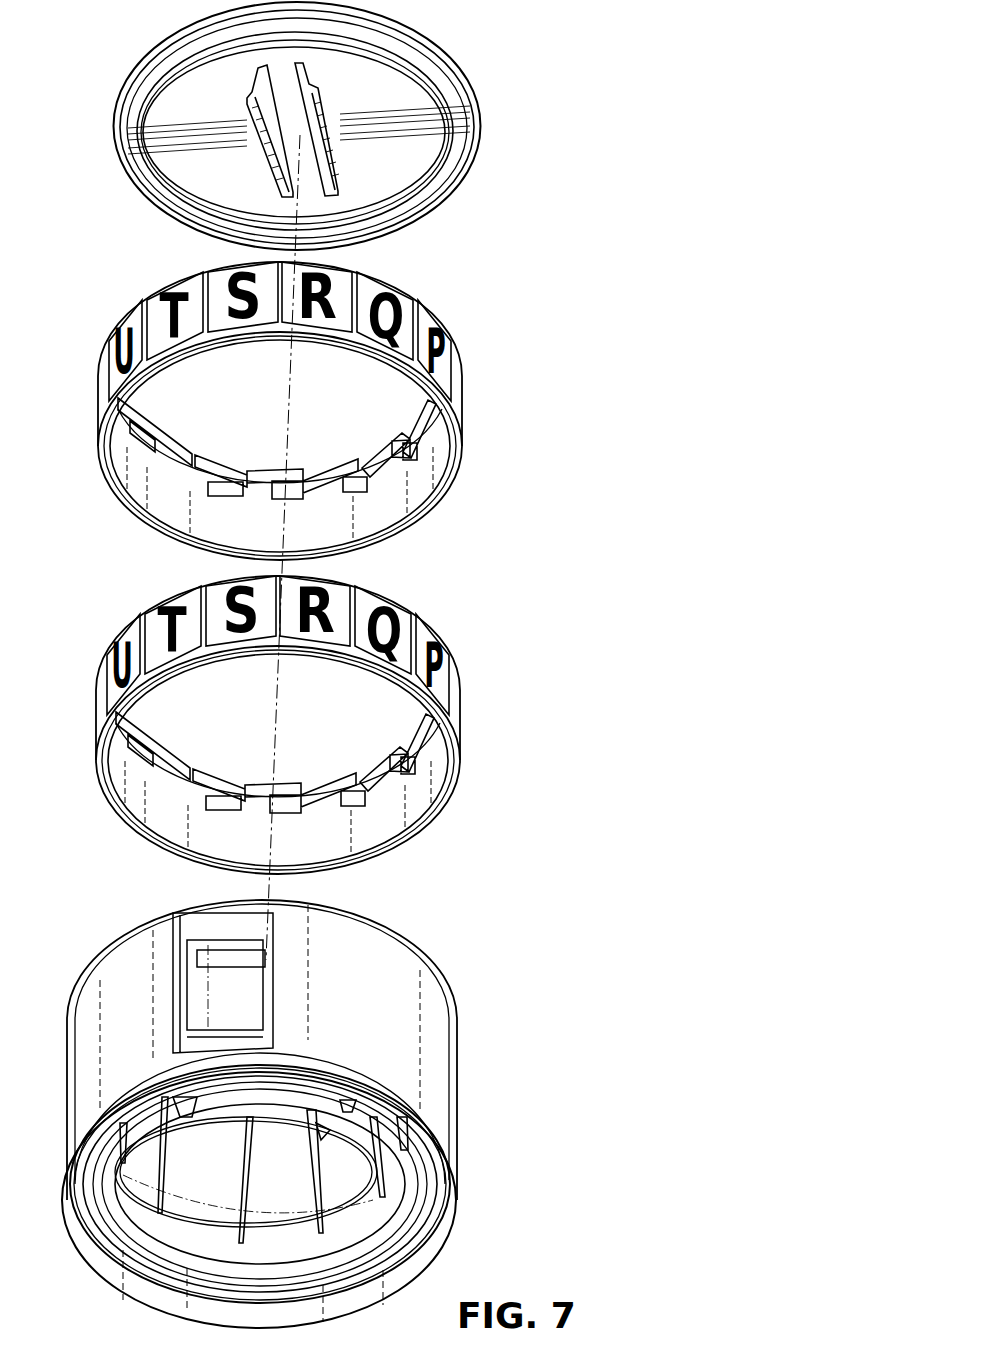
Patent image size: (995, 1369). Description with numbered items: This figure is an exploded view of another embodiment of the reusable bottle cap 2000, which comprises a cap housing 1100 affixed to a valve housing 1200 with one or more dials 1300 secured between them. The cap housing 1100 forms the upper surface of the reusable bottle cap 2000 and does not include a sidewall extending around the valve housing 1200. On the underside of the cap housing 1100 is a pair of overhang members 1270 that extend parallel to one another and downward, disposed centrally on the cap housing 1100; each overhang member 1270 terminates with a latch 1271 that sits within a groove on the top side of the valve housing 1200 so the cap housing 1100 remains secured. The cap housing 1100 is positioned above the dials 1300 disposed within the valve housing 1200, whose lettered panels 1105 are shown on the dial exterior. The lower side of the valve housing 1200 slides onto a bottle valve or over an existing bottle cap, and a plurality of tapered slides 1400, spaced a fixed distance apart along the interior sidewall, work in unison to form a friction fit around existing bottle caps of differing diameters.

The cap housing 1100 is at (340, 126).
The indicia panel 1105 is at (142, 308).
The valve housing 1200 is at (305, 1114).
The overhang members 1270 is at (322, 99).
The latch 1271 is at (247, 100).
The dials 1300 is at (462, 413).
The slides 1400 is at (323, 1160).
The reusable bottle cap 2000 is at (574, 194).